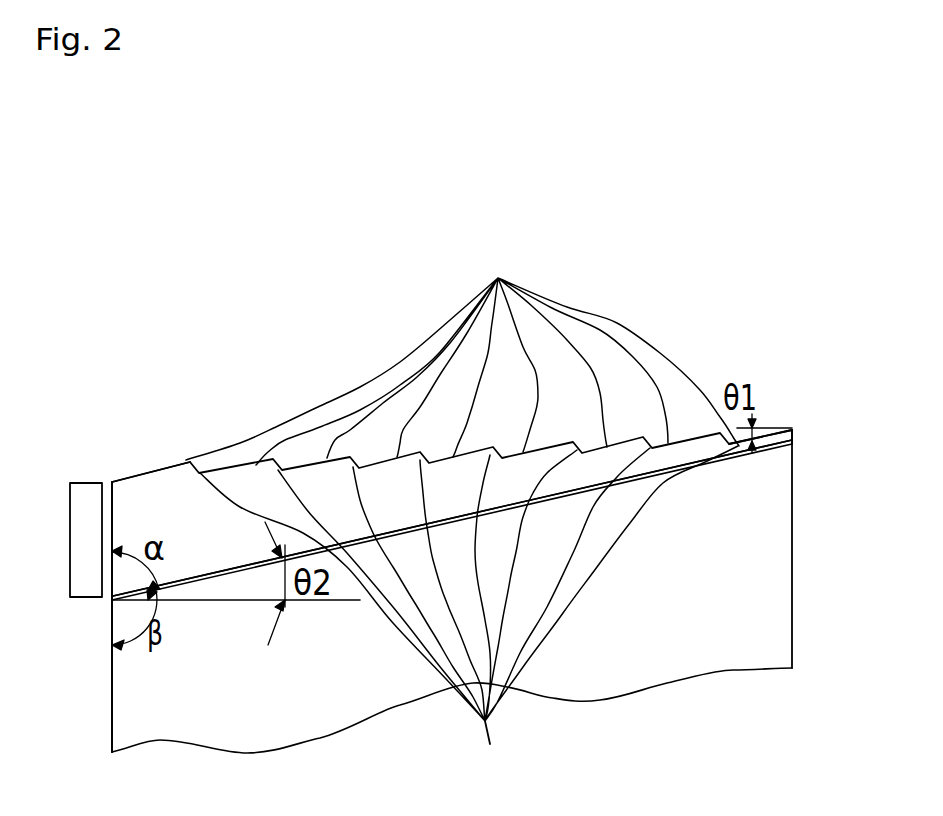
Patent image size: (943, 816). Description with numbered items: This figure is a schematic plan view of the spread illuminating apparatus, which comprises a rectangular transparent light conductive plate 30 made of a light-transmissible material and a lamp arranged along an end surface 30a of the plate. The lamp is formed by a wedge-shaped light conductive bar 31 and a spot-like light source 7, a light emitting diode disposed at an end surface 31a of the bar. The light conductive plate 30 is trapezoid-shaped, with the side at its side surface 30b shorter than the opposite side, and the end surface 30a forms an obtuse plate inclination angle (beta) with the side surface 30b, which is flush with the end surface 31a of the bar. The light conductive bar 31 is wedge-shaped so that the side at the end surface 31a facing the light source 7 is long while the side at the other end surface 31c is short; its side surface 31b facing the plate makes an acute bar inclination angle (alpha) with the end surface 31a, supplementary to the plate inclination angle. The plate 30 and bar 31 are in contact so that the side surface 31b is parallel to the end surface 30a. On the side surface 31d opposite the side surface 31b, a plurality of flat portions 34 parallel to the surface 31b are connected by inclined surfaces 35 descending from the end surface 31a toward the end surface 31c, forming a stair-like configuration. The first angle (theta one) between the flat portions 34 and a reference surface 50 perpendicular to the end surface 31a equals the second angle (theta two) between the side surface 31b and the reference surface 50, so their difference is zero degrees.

The spot-like light source 7 is at (90, 512).
The light conductive plate 30 is at (732, 645).
The end surface 30a is at (690, 466).
The side surface 30b is at (109, 714).
The light conductive bar 31 is at (193, 460).
The end surface 31a is at (109, 584).
The side surface 31b is at (210, 578).
The other end surface 31c is at (796, 442).
The side surface 31d is at (122, 479).
The flat portions 34 is at (462, 352).
The inclined surfaces 35 is at (469, 618).
The reference surface 50 is at (243, 600).